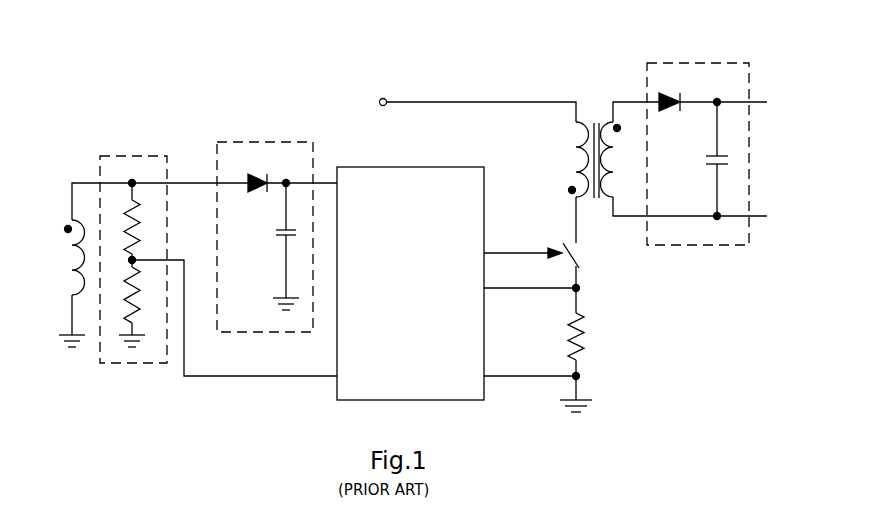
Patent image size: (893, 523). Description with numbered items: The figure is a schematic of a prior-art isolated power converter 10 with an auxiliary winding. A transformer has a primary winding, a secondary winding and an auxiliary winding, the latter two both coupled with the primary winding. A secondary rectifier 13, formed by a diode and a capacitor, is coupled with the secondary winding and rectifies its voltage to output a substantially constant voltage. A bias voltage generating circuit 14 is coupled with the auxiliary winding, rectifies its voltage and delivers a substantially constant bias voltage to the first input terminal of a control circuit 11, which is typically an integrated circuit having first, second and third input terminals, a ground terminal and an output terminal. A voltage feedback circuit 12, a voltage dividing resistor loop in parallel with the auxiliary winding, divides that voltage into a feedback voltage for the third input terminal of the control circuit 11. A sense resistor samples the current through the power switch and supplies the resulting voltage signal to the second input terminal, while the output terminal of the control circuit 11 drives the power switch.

The isolated power converter 10 is at (81, 31).
The control circuit 11 is at (422, 167).
The voltage feedback circuit 12 is at (134, 157).
The secondary rectifier 13 is at (694, 63).
The bias voltage generating circuit 14 is at (266, 143).